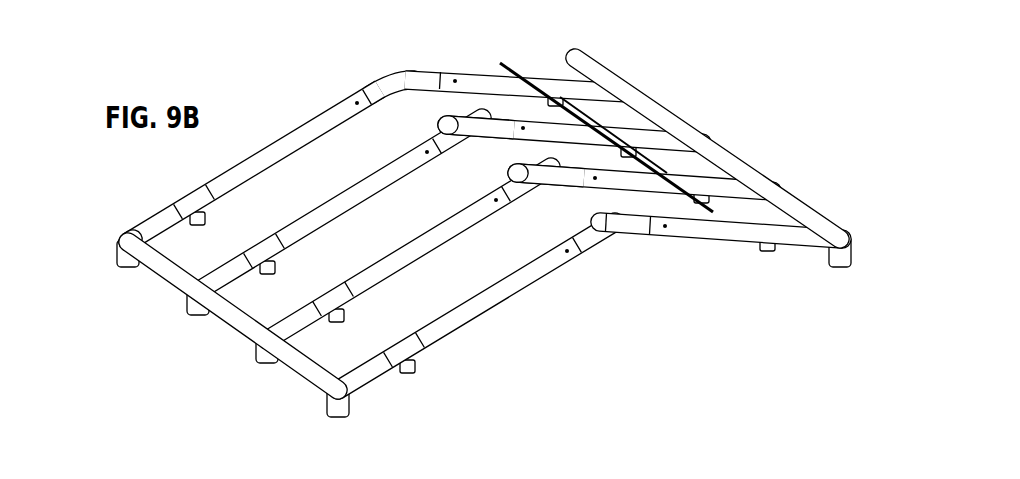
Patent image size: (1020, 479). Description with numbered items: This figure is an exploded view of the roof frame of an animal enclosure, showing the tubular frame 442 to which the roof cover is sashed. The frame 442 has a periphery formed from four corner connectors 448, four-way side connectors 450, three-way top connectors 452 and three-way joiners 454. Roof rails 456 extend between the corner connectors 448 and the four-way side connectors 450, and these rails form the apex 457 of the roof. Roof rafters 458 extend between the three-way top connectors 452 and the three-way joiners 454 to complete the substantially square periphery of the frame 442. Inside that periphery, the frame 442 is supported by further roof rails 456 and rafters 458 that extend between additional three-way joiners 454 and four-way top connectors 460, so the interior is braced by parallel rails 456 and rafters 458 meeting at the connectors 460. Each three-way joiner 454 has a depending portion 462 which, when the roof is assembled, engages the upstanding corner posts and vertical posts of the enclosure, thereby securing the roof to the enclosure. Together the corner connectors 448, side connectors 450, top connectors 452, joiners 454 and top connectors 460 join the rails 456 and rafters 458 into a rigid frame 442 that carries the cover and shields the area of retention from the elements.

The frame 442 is at (682, 109).
The corner connectors 448 is at (626, 80).
The four-way side connectors 450 is at (694, 138).
The three-way top connectors 452 is at (617, 232).
The three-way joiners 454 is at (640, 128).
The roof rails 456 is at (663, 107).
The apex 457 is at (385, 84).
The roof rafters 458 is at (468, 80).
The four-way top connectors 460 is at (445, 128).
The depending portion 462 is at (553, 93).